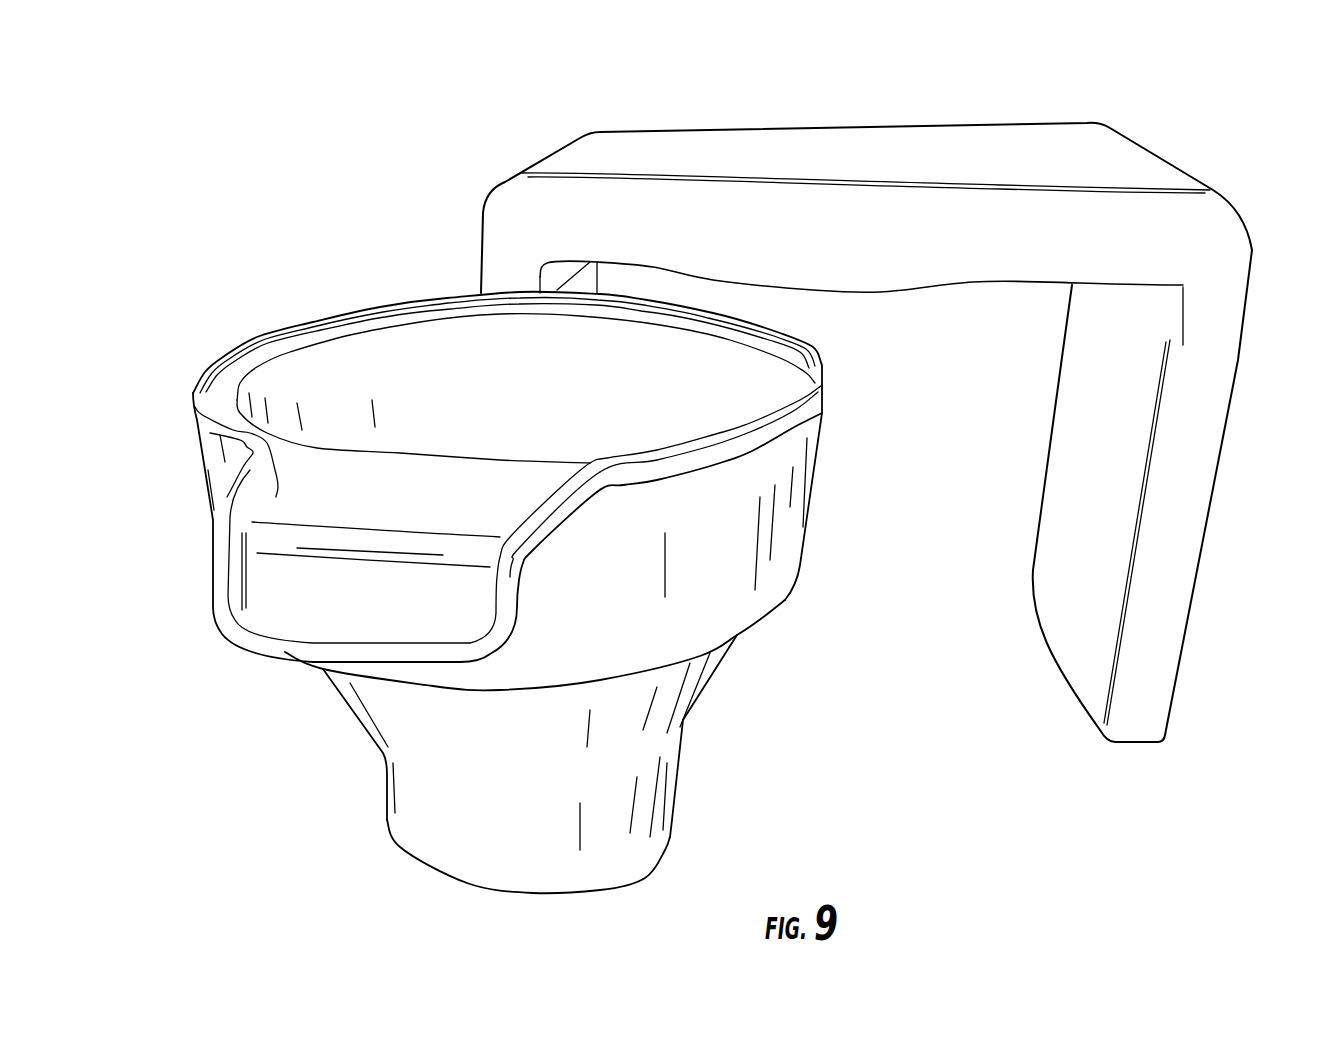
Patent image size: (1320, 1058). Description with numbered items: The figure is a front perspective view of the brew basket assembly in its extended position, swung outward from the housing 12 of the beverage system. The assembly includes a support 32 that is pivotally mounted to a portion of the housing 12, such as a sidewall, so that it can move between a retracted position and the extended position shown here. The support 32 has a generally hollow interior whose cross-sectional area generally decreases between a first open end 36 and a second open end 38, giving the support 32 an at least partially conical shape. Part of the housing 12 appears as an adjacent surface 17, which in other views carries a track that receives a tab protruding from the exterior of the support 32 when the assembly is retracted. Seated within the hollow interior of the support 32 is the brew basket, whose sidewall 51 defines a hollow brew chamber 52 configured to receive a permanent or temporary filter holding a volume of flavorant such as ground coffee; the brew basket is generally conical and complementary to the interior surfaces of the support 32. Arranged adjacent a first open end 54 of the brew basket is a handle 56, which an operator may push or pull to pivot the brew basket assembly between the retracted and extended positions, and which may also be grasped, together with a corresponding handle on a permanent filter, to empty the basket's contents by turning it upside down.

The housing 12 is at (1028, 222).
The adjacent surface 17 is at (1117, 537).
The support 32 is at (683, 717).
The first open end 36 is at (810, 450).
The second open end 38 is at (583, 887).
The sidewall of the brew chamber 51 is at (320, 412).
The brew chamber 52 is at (398, 357).
The first open end of the brew basket 54 is at (197, 404).
The handle 56 is at (282, 497).